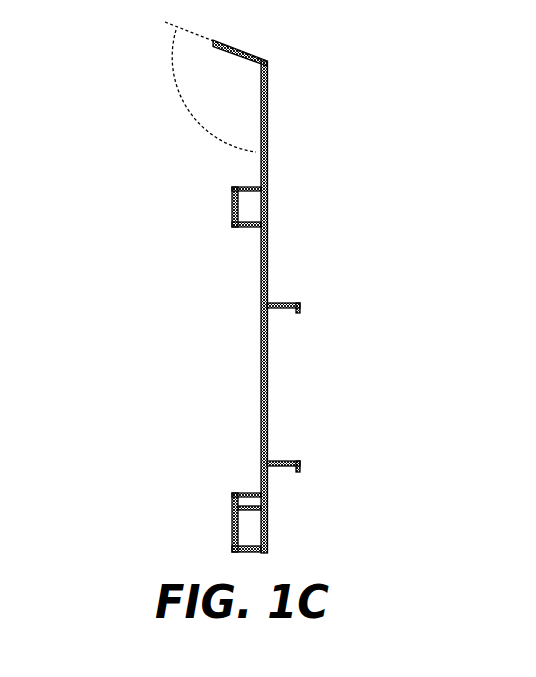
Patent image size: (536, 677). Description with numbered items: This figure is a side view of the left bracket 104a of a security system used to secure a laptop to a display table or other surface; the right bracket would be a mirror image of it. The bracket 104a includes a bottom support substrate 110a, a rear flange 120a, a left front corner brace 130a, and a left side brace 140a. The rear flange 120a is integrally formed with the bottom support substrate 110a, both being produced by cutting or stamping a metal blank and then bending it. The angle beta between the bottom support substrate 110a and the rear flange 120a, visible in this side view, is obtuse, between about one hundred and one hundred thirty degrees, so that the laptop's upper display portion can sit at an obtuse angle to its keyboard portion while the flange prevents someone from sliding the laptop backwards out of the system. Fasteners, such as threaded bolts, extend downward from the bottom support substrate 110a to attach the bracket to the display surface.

The first bracket 104a is at (98, 126).
The bottom support substrate 110a is at (261, 360).
The rear flange 120a is at (242, 50).
The left front corner brace 130a is at (202, 505).
The left side brace 140a is at (204, 209).